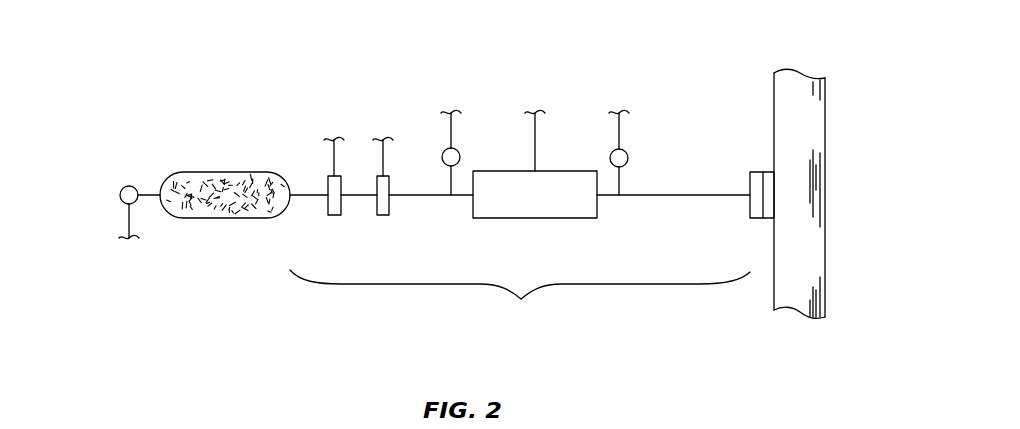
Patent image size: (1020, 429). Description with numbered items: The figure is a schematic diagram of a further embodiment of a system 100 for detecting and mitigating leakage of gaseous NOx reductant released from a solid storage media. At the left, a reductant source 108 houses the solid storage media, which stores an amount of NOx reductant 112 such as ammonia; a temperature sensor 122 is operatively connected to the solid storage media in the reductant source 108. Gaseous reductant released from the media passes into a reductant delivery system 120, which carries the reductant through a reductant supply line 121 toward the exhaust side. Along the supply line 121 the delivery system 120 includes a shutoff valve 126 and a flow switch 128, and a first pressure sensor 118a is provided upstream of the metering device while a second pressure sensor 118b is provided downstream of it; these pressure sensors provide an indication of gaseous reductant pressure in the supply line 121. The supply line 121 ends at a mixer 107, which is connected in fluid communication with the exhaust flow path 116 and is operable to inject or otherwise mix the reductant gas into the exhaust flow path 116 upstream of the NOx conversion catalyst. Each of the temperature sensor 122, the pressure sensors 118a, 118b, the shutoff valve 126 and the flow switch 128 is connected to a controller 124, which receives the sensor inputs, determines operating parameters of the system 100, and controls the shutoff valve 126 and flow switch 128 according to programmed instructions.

The system 100 is at (222, 53).
The mixer 107 is at (757, 172).
The reductant source 108 is at (225, 192).
The NOx reductant 112 is at (265, 205).
The exhaust flow path 116 is at (806, 129).
The first pressure sensor 118a is at (493, 140).
The second pressure sensor 118b is at (610, 157).
The reductant delivery system 120 is at (520, 300).
The reductant supply line 121 is at (652, 195).
The temperature sensor 122 is at (127, 185).
The controller 124 is at (365, 160).
The shutoff valve 126 is at (334, 215).
The flow switch 128 is at (383, 215).